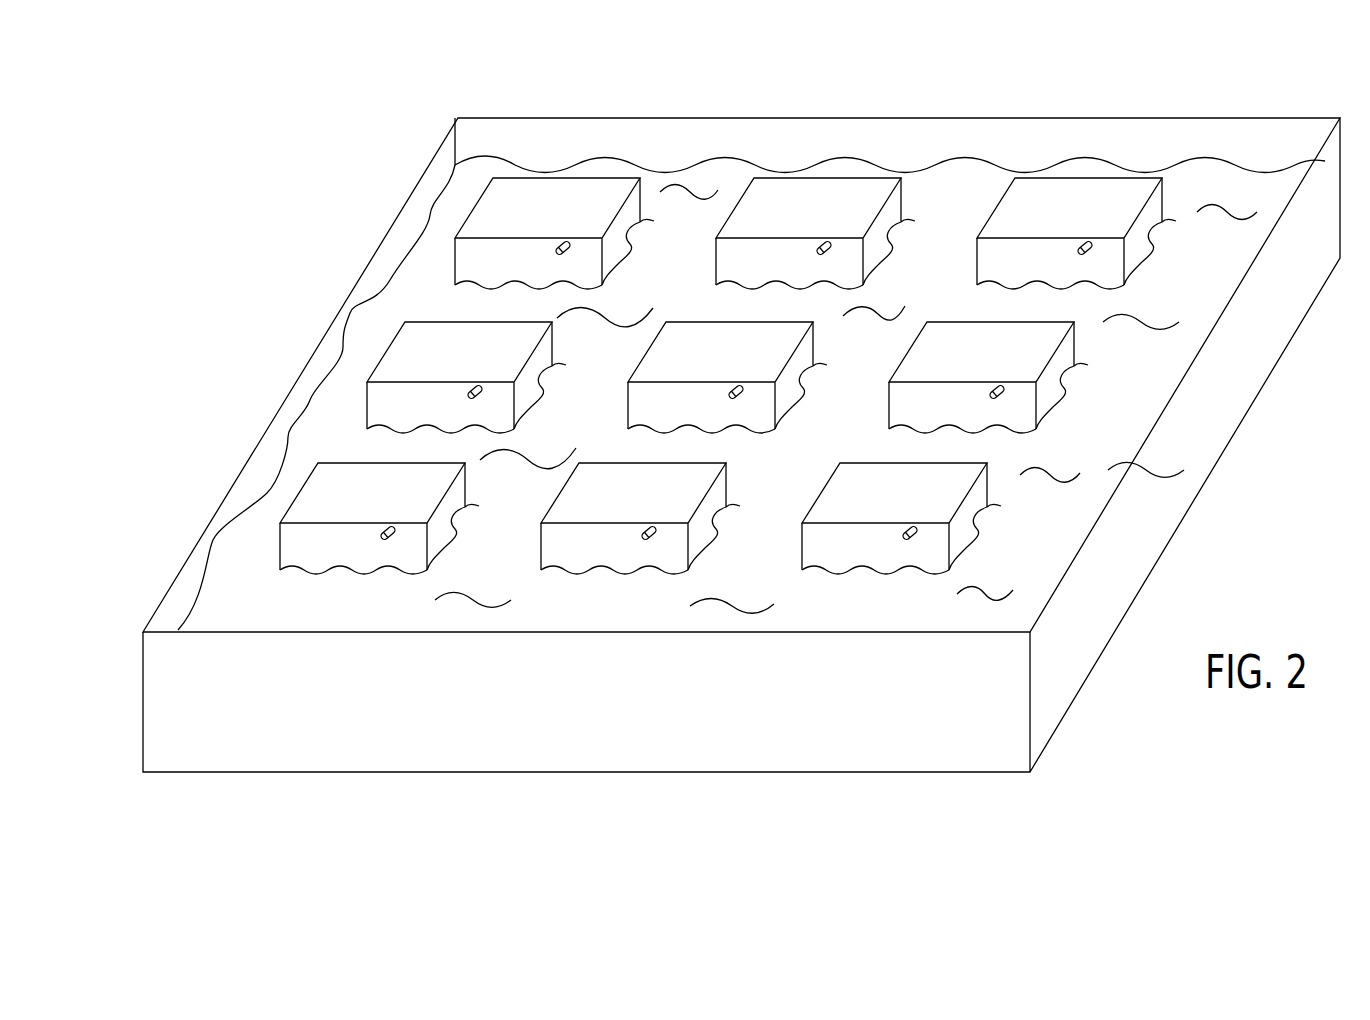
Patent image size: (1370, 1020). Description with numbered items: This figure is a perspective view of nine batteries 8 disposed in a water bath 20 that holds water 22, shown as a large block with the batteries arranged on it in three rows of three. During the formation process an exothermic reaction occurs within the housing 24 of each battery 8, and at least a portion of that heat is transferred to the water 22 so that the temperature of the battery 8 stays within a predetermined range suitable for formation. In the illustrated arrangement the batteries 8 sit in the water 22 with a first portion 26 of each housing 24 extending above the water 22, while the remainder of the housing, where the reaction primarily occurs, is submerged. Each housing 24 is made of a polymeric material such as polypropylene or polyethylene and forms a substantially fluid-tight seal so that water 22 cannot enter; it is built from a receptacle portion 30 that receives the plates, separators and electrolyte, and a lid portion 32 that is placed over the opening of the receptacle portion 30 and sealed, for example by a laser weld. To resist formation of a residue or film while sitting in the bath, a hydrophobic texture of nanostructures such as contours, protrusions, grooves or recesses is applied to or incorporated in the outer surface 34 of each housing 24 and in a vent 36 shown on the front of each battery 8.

The battery 8 is at (577, 195).
The water bath 20 is at (741, 416).
The water 22 is at (363, 343).
The housing 24 is at (602, 213).
The first portion 26 is at (485, 255).
The receptacle portion 30 is at (587, 262).
The lid portion 32 is at (512, 192).
The outer surface 34 is at (508, 261).
The vent 36 is at (559, 243).